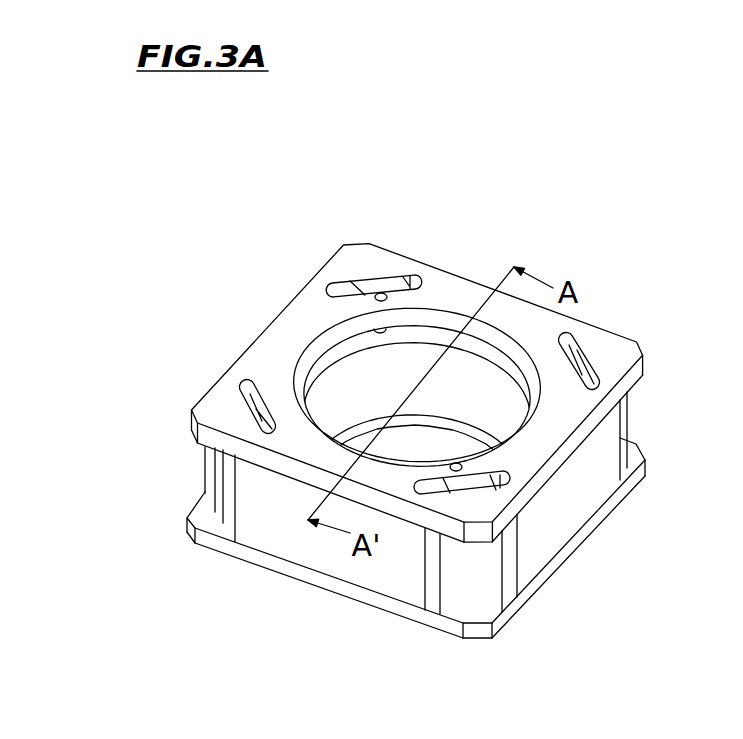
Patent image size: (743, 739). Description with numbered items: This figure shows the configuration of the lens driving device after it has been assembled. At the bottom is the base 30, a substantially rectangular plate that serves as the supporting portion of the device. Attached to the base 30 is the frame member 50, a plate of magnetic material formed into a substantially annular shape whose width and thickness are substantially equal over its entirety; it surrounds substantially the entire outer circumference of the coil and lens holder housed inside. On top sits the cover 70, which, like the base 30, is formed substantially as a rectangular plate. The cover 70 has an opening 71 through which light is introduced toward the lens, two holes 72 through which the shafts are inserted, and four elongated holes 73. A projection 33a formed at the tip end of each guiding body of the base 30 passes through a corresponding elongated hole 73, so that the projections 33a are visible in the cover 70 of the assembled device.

The base 30 is at (348, 593).
The frame member 50 is at (308, 540).
The cover 70 is at (497, 283).
The opening 71 is at (350, 362).
The holes 72 is at (385, 296).
The elongated holes 73 is at (330, 283).
The projection 33a is at (372, 287).